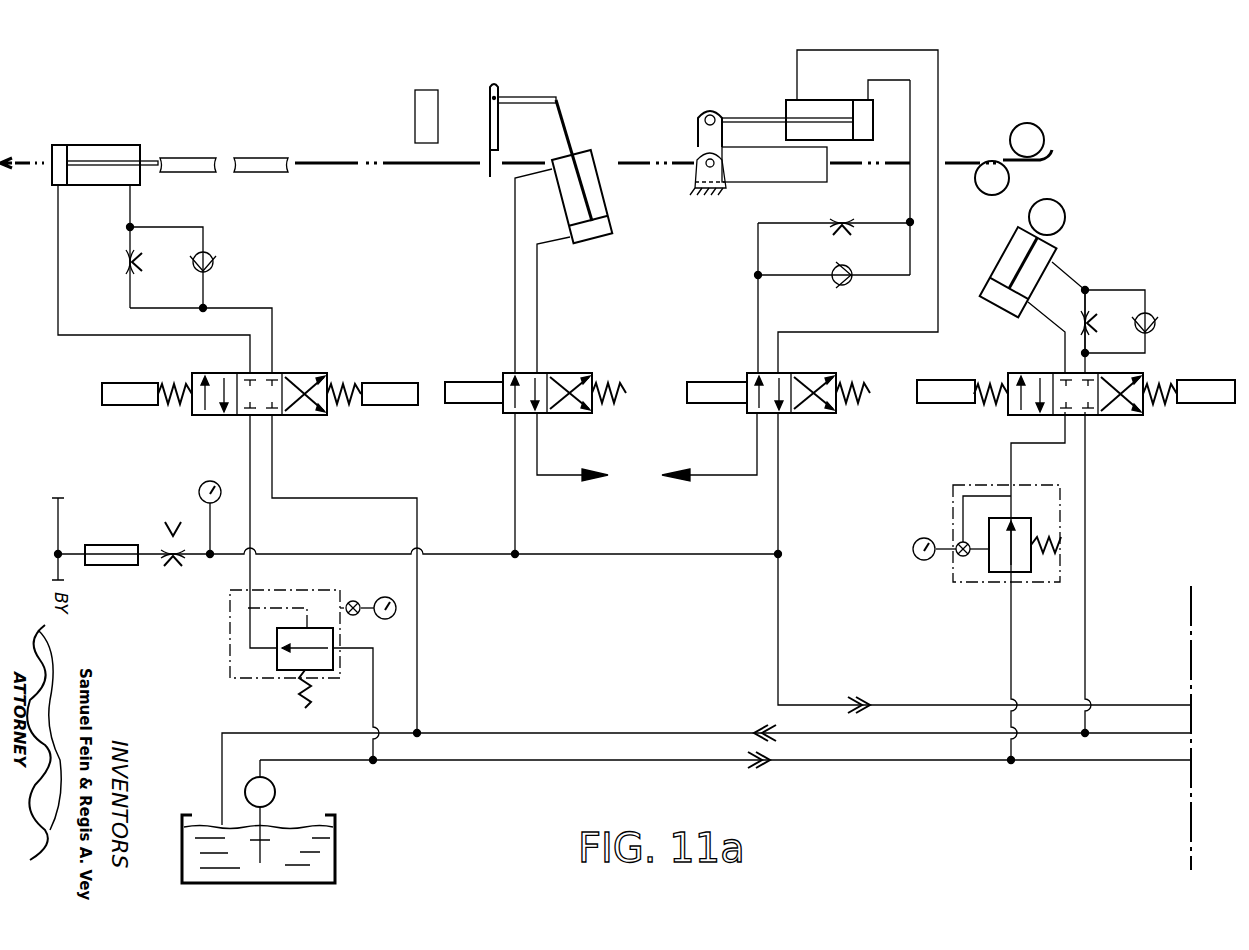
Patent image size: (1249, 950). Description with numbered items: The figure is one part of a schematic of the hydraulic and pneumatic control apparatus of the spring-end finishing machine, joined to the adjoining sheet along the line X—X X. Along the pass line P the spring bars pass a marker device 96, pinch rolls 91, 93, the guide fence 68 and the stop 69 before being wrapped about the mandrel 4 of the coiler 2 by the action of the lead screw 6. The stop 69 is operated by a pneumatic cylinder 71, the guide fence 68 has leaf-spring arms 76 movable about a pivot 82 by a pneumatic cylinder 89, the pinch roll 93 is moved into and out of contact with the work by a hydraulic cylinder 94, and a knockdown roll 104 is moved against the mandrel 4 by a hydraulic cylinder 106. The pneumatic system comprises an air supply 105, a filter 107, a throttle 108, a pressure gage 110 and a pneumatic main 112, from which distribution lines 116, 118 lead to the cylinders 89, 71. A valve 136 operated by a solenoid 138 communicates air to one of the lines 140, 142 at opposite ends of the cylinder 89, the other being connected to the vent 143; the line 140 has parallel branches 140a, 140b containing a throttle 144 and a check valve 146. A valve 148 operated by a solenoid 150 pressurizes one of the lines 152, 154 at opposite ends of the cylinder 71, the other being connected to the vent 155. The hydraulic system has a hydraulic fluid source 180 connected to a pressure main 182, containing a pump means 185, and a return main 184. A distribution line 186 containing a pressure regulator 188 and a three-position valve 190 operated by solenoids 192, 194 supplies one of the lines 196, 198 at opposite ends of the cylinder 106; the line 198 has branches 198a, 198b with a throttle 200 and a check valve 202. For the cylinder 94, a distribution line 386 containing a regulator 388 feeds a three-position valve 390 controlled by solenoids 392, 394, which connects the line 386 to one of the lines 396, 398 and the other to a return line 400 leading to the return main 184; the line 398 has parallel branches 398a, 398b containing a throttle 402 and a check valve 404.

The pass line P is at (355, 157).
The coiler 2 is at (998, 112).
The mandrel 4 is at (1038, 128).
The lead screw 6 is at (978, 190).
The guide fence 68 is at (705, 111).
The stop 69 is at (547, 97).
The pneumatic cylinder 71 is at (600, 208).
The leaf-spring arms 76 is at (750, 184).
The pivot 82 is at (705, 165).
The pneumatic cylinder 89 is at (822, 108).
The pinch roll 91 is at (258, 156).
The pinch roll 93 is at (190, 156).
The hydraulic cylinder 94 is at (96, 146).
The marker device 96 is at (424, 90).
The knockdown roll 104 is at (1066, 212).
The air supply 105 is at (62, 502).
The hydraulic cylinder 106 is at (1008, 252).
The filter 107 is at (115, 566).
The throttle 108 is at (170, 566).
The pressure gage 110 is at (204, 480).
The pneumatic main 112 is at (302, 556).
The distribution line 116 is at (780, 487).
The distribution line 118 is at (513, 500).
The valve 136 is at (806, 372).
The solenoid 138 is at (712, 380).
The line 140 is at (756, 314).
The branch 140a is at (756, 248).
The branch 140b is at (800, 273).
The line 142 is at (845, 331).
The vent 143 is at (707, 478).
The throttle 144 is at (846, 213).
The check valve 146 is at (850, 271).
The valve 148 is at (562, 372).
The solenoid 150 is at (476, 380).
The line 152 is at (513, 305).
The line 154 is at (539, 303).
The vent 155 is at (562, 478).
The hydraulic fluid source 180 is at (312, 840).
The pressure main 182 is at (438, 762).
The return main 184 is at (474, 731).
The pump means 185 is at (278, 790).
The distribution line 186 is at (1013, 664).
The pressure regulator 188 is at (982, 584).
The valve 190 is at (1022, 414).
The solenoid 192 is at (940, 406).
The solenoid 194 is at (1212, 406).
The line 196 is at (1032, 318).
The line 198 is at (1060, 272).
The branch 198a is at (1058, 318).
The branch 198b is at (1120, 290).
The throttle 200 is at (1098, 325).
The check valve 202 is at (1158, 316).
The distribution line 386 is at (371, 712).
The regulator 388 is at (230, 636).
The three-position valve 390 is at (285, 371).
The solenoid 392 is at (130, 406).
The solenoid 394 is at (385, 382).
The line 396 is at (98, 337).
The line 398 is at (248, 307).
The branch 398a is at (168, 307).
The branch 398b is at (172, 226).
The return line 400 is at (420, 628).
The throttle 402 is at (120, 276).
The check valve 404 is at (212, 258).
The joining line X— X is at (1190, 725).